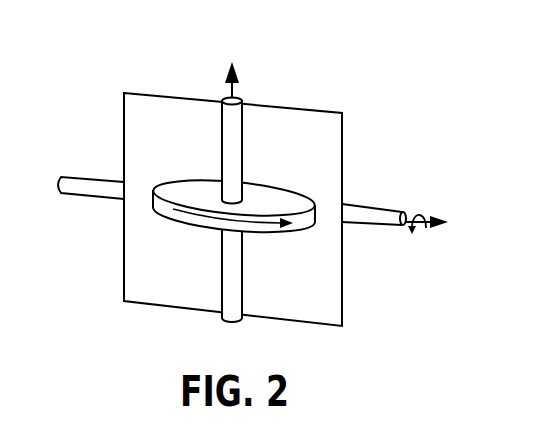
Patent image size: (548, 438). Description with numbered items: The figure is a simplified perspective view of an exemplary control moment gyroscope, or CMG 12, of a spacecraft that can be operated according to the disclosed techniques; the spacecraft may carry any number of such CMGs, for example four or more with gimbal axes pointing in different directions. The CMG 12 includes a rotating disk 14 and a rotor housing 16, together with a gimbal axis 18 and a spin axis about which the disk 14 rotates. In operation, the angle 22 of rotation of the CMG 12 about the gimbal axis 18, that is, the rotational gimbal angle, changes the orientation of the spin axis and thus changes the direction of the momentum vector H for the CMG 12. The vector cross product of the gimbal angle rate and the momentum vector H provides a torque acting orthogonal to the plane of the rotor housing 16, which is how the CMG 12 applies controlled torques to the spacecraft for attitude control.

The control moment gyroscope (CMG) 12 is at (82, 57).
The rotating disk 14 is at (192, 193).
The rotor housing 16 is at (136, 113).
The gimbal axis 18 is at (88, 185).
The angle of rotation 22 is at (435, 192).